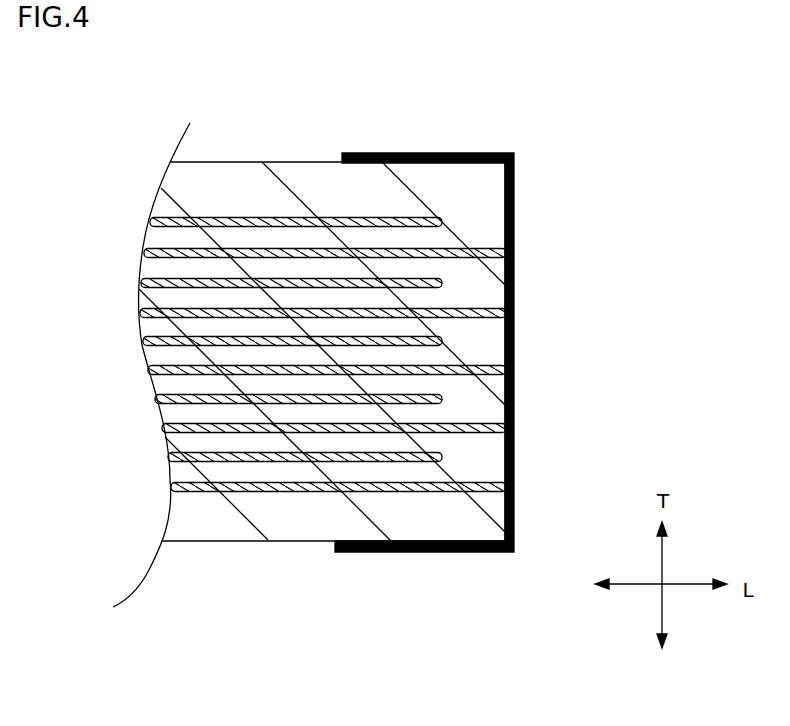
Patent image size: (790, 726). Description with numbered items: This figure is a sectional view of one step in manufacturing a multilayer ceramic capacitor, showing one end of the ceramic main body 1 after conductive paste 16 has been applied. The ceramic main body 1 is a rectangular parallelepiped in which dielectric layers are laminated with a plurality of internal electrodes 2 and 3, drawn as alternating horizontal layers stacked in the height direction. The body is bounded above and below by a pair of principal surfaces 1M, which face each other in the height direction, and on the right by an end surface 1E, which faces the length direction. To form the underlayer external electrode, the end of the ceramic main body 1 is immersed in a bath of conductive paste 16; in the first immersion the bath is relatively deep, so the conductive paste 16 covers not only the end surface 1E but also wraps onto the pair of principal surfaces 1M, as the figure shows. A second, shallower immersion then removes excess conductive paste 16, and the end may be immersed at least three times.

The ceramic main body 1 is at (245, 193).
The internal electrode 2 is at (282, 215).
The internal electrode 3 is at (315, 245).
The principal surface 1M is at (399, 127).
The end surface 1E is at (560, 350).
The conductive paste 16 is at (514, 212).